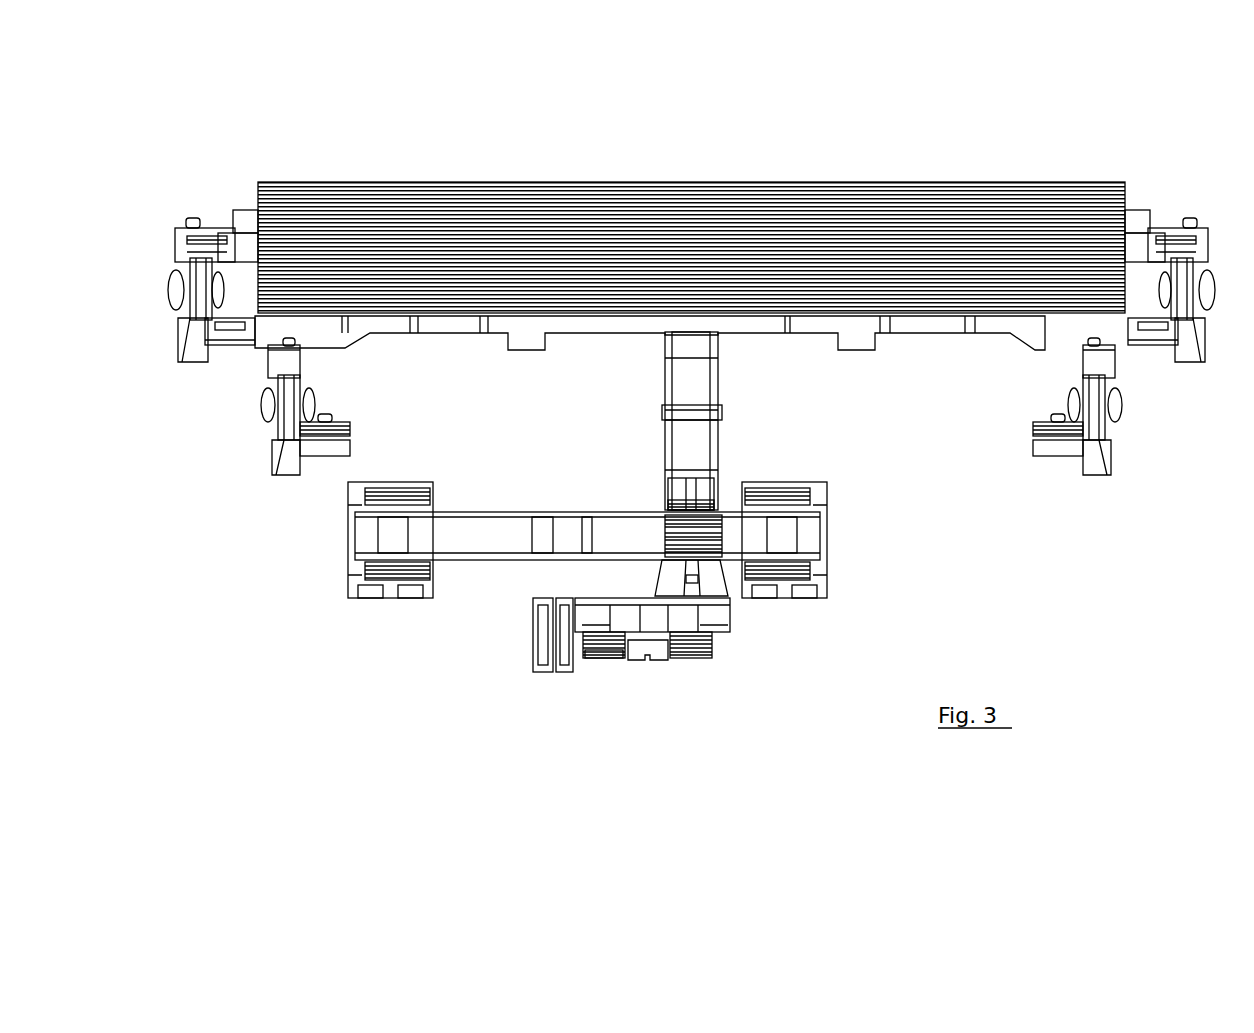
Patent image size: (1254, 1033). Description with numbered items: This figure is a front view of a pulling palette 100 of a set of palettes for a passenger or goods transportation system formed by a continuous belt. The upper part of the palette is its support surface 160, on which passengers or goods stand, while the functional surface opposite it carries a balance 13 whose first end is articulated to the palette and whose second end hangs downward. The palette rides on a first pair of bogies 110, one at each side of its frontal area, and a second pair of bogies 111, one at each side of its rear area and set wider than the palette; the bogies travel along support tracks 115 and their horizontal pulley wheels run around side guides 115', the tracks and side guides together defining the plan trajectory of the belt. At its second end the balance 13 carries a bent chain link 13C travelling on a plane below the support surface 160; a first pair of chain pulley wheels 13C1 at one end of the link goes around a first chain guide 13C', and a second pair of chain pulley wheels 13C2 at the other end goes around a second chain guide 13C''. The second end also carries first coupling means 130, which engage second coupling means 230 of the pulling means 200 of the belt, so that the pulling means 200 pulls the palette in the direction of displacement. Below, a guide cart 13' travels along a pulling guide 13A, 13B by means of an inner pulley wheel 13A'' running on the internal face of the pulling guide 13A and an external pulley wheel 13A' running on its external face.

The pulling palette 100 is at (272, 148).
The support surface 160 is at (832, 180).
The balance 13 is at (650, 413).
The second pair of bogies 111 is at (172, 217).
The first pair of bogies 110 is at (258, 476).
The support tracks 115 is at (666, 430).
The side guides 115' is at (691, 440).
The chain link 13C is at (587, 501).
The first chain guide 13C' is at (391, 507).
The second chain guide 13C'' is at (813, 511).
The first pair of chain pulley wheels 13C1 is at (358, 588).
The second pair of chain pulley wheels 13C2 is at (820, 562).
The first coupling means 130 is at (664, 490).
The second coupling means 230 is at (708, 580).
The guide cart 13' is at (695, 645).
The pulling means 200 is at (557, 678).
The pulling guide 13A is at (732, 679).
The external pulley wheel 13A' is at (577, 709).
The inner pulley wheel 13A'' is at (627, 711).
The pulling guide 13B is at (651, 653).